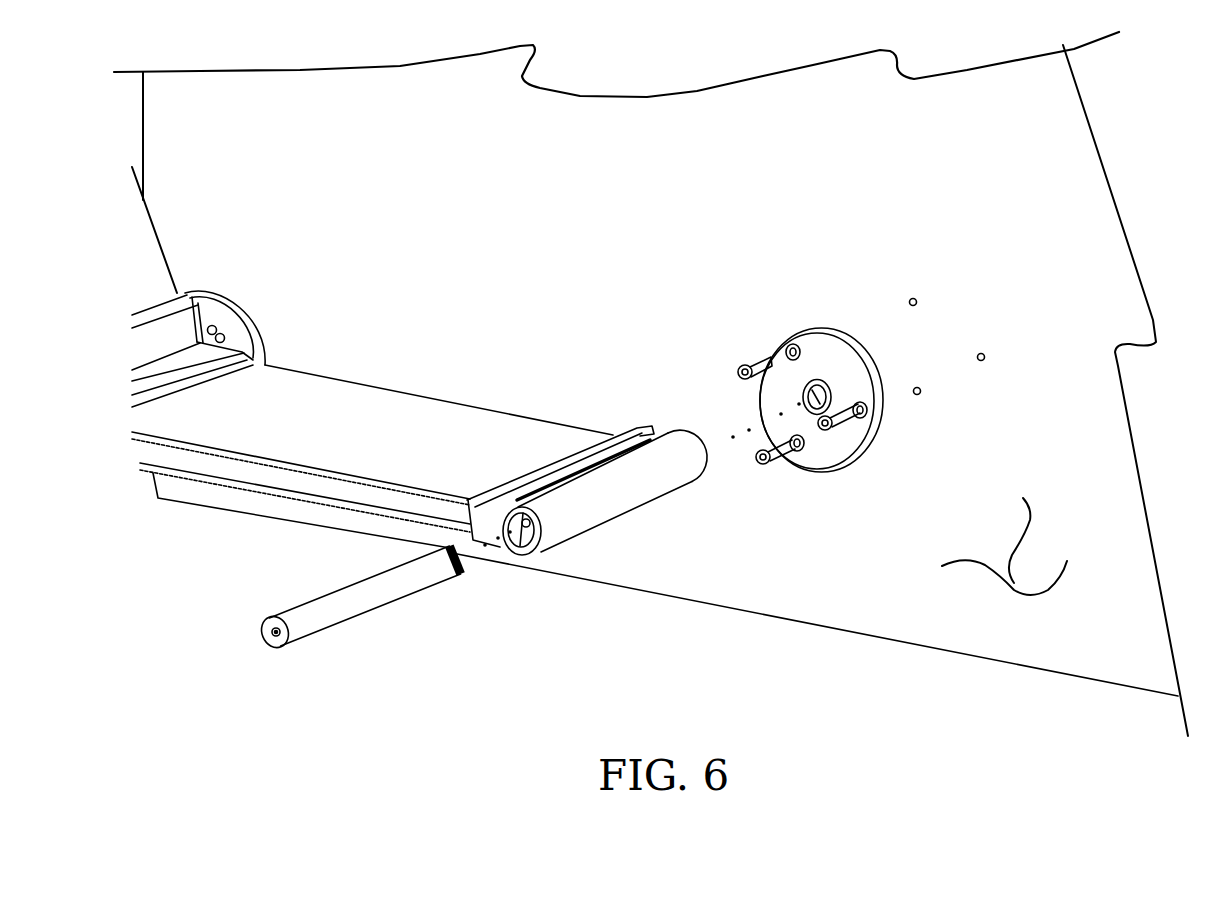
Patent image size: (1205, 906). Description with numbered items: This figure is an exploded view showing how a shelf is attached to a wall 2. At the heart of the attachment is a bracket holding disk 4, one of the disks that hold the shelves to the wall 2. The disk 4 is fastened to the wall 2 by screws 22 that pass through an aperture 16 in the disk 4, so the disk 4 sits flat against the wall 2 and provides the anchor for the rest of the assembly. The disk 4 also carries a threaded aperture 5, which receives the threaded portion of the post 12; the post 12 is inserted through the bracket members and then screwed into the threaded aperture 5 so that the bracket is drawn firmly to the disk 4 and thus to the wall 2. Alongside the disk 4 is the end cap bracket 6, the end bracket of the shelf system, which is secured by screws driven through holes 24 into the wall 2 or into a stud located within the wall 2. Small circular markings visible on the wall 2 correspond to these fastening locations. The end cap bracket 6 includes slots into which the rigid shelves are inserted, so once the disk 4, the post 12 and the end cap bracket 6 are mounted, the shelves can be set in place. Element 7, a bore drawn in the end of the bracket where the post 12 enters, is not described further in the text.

The wall 2 is at (1014, 583).
The bracket holding disk 4 is at (860, 442).
The threaded aperture 5 is at (817, 390).
The end cap bracket 6 is at (603, 507).
The axle bore of roller 7 is at (513, 557).
The post 12 is at (383, 588).
The aperture 16 is at (794, 340).
The screws 22 is at (750, 365).
The holes 24 is at (915, 297).